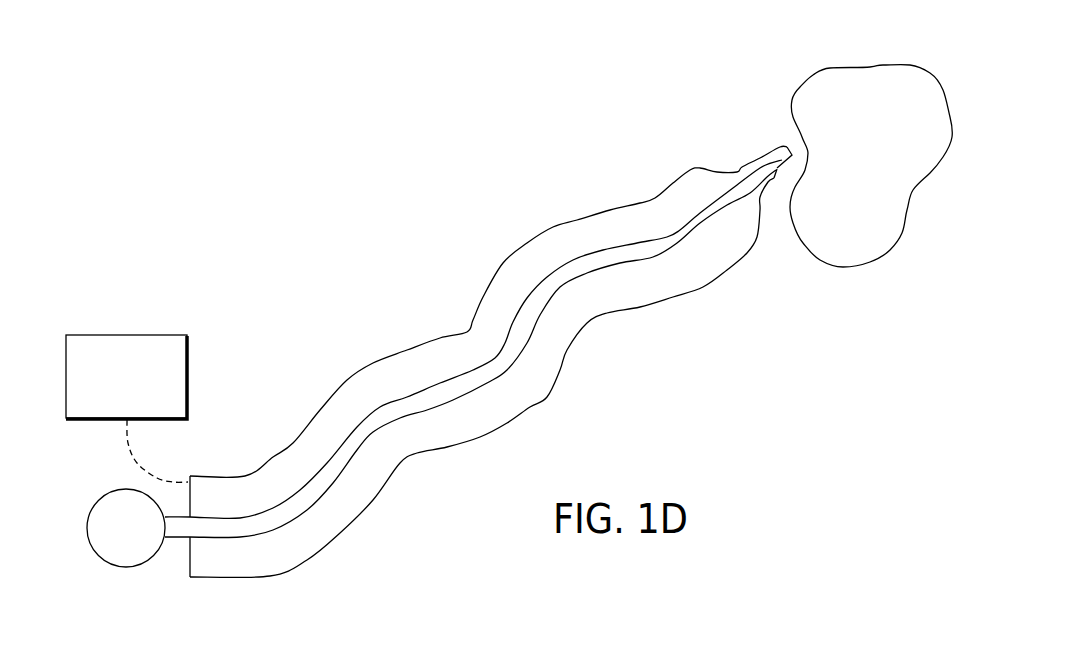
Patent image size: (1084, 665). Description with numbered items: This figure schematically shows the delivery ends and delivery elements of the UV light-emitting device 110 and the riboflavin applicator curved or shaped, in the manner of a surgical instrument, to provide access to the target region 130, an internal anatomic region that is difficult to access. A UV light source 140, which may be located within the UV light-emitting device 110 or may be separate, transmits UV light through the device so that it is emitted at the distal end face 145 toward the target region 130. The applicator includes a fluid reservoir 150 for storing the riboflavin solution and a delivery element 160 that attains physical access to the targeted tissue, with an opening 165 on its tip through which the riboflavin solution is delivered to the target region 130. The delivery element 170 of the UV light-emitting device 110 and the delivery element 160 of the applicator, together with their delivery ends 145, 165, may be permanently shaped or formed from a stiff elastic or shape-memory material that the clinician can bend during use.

The UV light-emitting device 110 is at (570, 220).
The target region 130 is at (868, 65).
The UV light source 140 is at (188, 370).
The end face 145 is at (738, 164).
The fluid reservoir 150 is at (128, 565).
The delivery element 160 is at (257, 523).
The opening 165 is at (788, 147).
The delivery element 170 is at (357, 367).